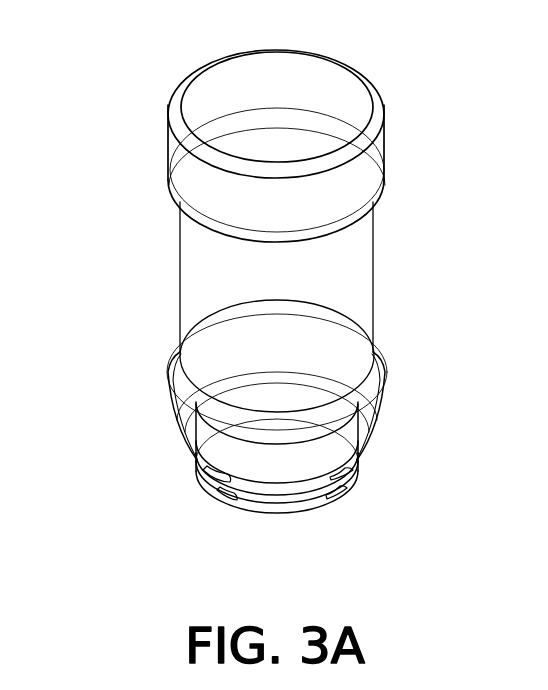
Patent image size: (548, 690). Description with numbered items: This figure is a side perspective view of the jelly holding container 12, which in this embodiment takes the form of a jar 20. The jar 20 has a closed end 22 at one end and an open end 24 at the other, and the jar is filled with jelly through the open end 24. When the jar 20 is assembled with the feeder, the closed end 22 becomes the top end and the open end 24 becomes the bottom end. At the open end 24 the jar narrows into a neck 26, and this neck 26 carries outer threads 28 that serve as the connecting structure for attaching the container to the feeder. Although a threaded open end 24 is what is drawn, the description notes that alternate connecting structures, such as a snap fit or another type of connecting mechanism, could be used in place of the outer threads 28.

The jelly holding container 12 is at (114, 128).
The jar 20 is at (355, 265).
The closed end 22 is at (345, 88).
The open end 24 is at (230, 499).
The neck 26 is at (348, 475).
The outer threads 28 is at (302, 507).